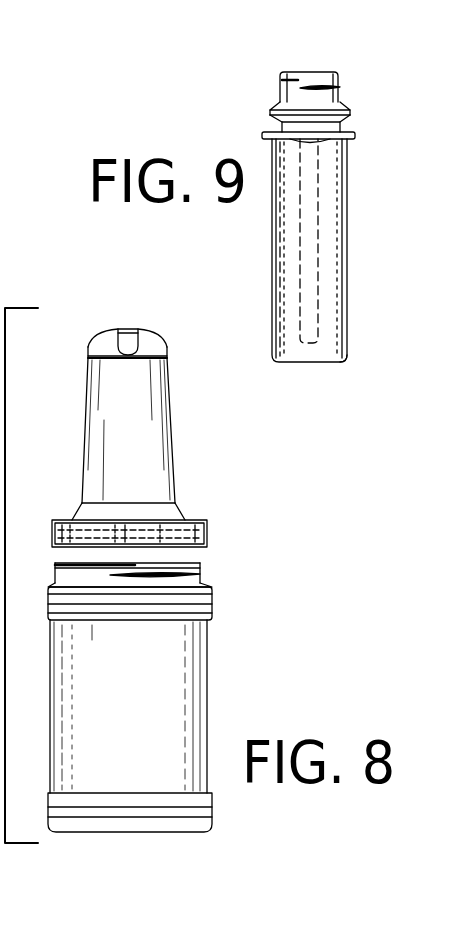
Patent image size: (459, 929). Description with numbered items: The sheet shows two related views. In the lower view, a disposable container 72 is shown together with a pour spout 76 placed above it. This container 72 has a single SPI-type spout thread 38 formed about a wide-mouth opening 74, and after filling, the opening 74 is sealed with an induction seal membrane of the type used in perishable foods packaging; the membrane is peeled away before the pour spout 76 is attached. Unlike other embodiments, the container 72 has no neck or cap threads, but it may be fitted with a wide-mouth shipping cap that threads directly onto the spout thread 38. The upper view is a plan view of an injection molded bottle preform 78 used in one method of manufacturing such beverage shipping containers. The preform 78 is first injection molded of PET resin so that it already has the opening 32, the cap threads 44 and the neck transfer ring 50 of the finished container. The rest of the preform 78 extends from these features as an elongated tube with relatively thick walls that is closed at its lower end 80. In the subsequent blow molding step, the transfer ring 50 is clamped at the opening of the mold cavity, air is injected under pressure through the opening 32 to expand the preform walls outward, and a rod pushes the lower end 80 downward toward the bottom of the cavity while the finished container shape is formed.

In FIG. 9, the opening 32 is at (315, 64).
In FIG. 9, the cap threads 44 is at (340, 87).
In FIG. 9, the neck transfer ring 50 is at (354, 136).
In FIG. 9, the bottle preform 78 is at (347, 240).
In FIG. 9, the lower end 80 is at (348, 363).
In FIG. 8, the pour spout 76 is at (83, 433).
In FIG. 8, the wide-mouth opening 74 is at (178, 558).
In FIG. 8, the spout thread 38 is at (200, 565).
In FIG. 8, the disposable container 72 is at (212, 705).